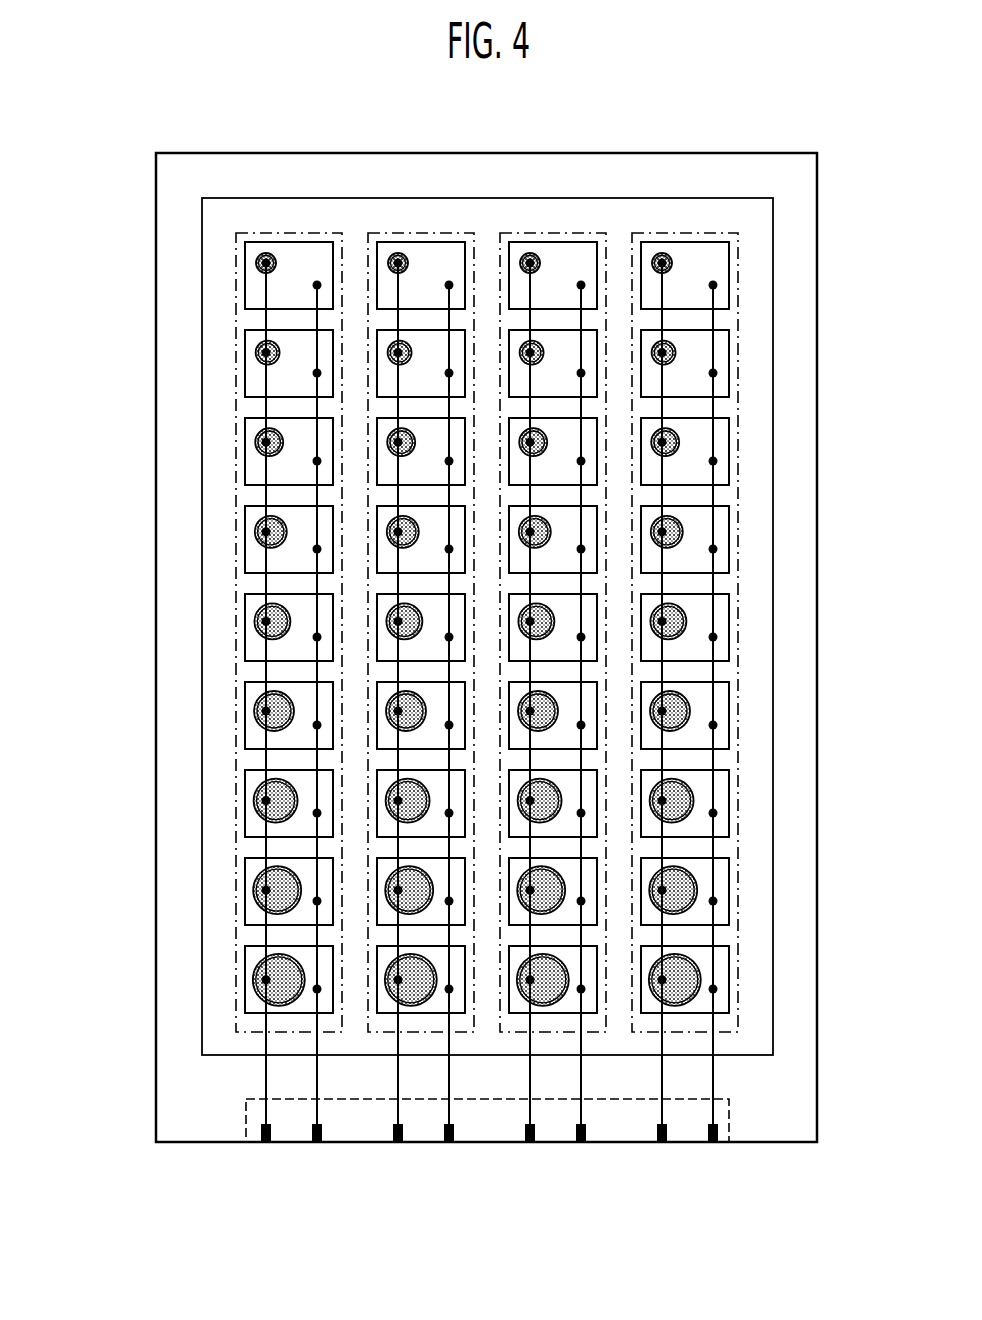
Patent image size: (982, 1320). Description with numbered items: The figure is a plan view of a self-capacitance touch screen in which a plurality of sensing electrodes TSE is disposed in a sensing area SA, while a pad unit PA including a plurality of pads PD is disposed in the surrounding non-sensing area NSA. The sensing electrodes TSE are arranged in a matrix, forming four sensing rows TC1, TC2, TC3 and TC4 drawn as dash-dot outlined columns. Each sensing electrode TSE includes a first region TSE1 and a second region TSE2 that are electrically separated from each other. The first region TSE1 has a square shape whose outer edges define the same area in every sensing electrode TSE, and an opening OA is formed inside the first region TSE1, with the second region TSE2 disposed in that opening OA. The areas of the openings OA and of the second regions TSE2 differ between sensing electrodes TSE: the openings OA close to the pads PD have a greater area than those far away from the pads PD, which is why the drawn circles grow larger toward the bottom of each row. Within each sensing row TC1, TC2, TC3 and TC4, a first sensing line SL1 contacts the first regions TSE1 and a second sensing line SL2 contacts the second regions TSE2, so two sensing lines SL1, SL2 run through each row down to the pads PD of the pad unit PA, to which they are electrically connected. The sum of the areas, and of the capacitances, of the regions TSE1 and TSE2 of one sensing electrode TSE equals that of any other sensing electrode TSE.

The sensing row TC1 is at (288, 232).
The sensing row TC2 is at (421, 572).
The sensing row TC3 is at (553, 572).
The sensing row TC4 is at (685, 572).
The sensing electrode TSE is at (712, 263).
The first region TSE1 is at (256, 382).
The second region TSE2 is at (476, 629).
The non-sensing area NSA is at (802, 495).
The sensing area SA is at (773, 633).
The opening OA is at (690, 807).
The first sensing line SL1 is at (319, 1114).
The second sensing line SL2 is at (266, 1114).
The pad PD is at (660, 1134).
The pad unit PA is at (730, 1113).